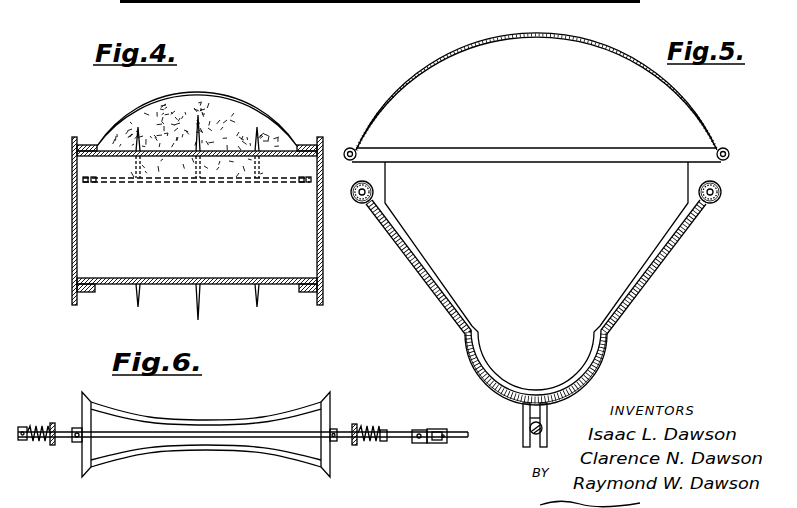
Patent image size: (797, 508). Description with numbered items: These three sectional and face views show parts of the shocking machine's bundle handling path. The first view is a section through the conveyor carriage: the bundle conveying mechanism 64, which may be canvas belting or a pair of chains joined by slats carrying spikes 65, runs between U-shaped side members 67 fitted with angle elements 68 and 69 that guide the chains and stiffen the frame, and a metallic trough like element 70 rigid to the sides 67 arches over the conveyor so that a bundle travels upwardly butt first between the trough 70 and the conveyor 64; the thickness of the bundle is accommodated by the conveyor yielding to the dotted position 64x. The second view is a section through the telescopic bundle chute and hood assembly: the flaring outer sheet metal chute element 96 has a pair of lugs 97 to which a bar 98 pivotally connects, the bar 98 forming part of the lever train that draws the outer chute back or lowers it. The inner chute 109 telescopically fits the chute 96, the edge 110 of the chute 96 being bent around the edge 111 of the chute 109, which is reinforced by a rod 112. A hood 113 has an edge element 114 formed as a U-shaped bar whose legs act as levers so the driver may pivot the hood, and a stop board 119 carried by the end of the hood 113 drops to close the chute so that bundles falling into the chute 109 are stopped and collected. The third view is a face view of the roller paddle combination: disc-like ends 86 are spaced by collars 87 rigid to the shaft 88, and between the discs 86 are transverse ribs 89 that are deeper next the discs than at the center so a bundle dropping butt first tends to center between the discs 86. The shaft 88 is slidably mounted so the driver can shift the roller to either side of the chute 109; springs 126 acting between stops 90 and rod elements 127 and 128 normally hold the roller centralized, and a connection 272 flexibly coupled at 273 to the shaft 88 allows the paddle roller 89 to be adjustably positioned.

In FIG. 4, the bundle conveying mechanism 64 is at (251, 150).
In FIG. 4, the dotted position of conveyor 64x is at (300, 187).
In FIG. 4, the spikes 65 is at (200, 308).
In FIG. 4, the side members 67 is at (72, 231).
In FIG. 4, the angle elements 68 is at (78, 292).
In FIG. 4, the angle elements 69 is at (72, 166).
In FIG. 4, the trough like element 70 is at (248, 103).
In FIG. 6, the disc-like ends 86 is at (90, 396).
In FIG. 6, the collars 87 is at (73, 443).
In FIG. 6, the shaft 88 is at (347, 447).
In FIG. 6, the transverse ribs 89 is at (172, 421).
In FIG. 6, the stops 90 is at (51, 446).
In FIG. 5, the outer sheet metal chute element 96 is at (424, 282).
In FIG. 5, the lugs 97 is at (524, 426).
In FIG. 5, the bar 98 is at (542, 431).
In FIG. 5, the inner chute 109 is at (455, 313).
In FIG. 5, the edge of chute 96 110 is at (721, 186).
In FIG. 5, the edge of chute 109 111 is at (704, 203).
In FIG. 5, the rod 112 is at (720, 192).
In FIG. 5, the hood 113 is at (561, 33).
In FIG. 5, the edge element 114 is at (357, 148).
In FIG. 5, the stop board 119 is at (536, 276).
In FIG. 6, the springs 126 is at (38, 427).
In FIG. 6, the rod element 127 is at (388, 430).
In FIG. 6, the rod element 128 is at (22, 427).
In FIG. 6, the connection 272 is at (447, 430).
In FIG. 6, the flexible coupling 273 is at (428, 443).